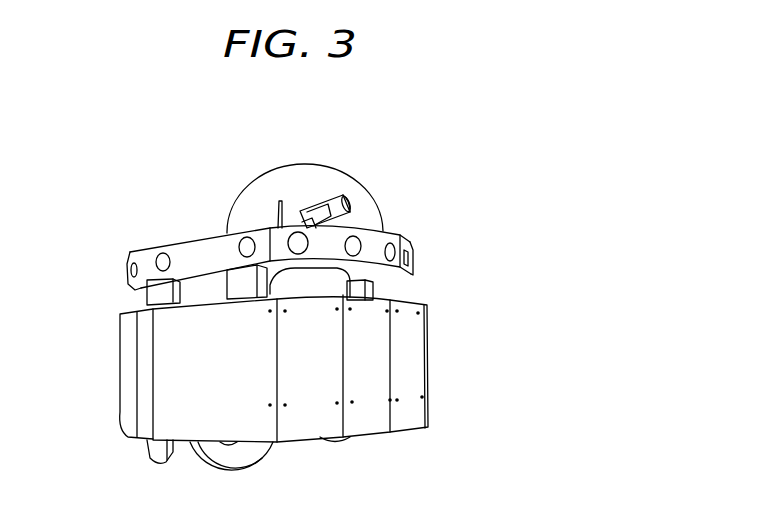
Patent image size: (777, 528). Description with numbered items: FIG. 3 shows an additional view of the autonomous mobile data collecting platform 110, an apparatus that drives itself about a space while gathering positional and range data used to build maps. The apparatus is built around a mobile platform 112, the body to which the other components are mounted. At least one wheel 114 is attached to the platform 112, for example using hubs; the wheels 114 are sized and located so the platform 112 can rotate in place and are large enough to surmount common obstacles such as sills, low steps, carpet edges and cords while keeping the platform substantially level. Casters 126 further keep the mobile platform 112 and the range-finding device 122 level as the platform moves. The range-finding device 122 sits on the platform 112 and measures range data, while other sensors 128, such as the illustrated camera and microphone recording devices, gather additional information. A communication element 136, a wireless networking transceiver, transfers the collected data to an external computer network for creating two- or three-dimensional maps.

The autonomous mobile data collecting platform 110 is at (447, 190).
The mobile platform 112 is at (428, 366).
The wheel 114 is at (257, 450).
The range-finding device 122 is at (338, 285).
The caster 126 is at (160, 450).
The sensor 128 is at (323, 197).
The communication element 136 is at (273, 215).